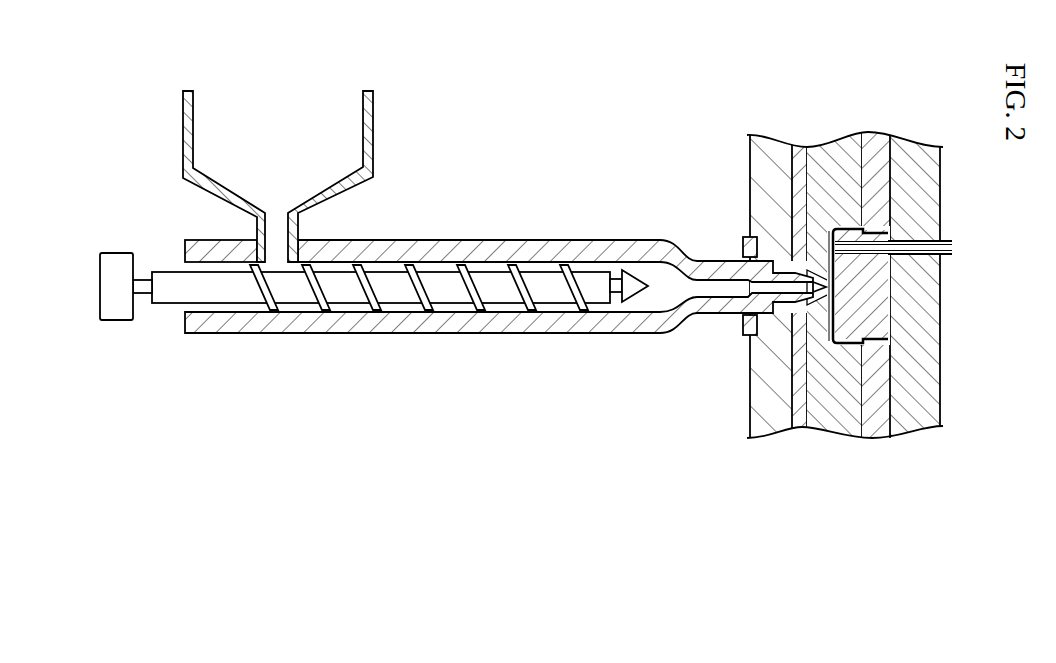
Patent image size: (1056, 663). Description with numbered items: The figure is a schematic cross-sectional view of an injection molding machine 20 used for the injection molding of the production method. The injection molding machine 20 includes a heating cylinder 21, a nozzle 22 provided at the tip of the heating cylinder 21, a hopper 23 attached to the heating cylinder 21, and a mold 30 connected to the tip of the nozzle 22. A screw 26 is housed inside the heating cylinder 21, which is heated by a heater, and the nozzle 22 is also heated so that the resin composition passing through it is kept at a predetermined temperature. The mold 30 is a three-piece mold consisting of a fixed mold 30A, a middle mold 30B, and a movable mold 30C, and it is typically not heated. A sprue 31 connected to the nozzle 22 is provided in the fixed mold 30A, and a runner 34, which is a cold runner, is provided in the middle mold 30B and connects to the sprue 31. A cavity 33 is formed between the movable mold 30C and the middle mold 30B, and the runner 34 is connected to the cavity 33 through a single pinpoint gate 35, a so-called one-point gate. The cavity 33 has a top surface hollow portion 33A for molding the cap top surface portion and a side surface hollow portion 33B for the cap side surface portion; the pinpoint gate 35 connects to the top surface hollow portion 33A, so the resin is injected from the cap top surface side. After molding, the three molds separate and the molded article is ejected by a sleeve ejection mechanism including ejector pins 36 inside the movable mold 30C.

The injection molding machine 20 is at (576, 126).
The heating cylinder 21 is at (505, 298).
The nozzle 22 is at (717, 261).
The hopper 23 is at (376, 105).
The screw 26 is at (349, 294).
The mold 30 is at (892, 104).
The fixed mold 30A is at (809, 445).
The middle mold 30B is at (835, 418).
The movable mold 30C is at (938, 445).
The sprue 31 is at (782, 260).
The cavity 33 is at (840, 243).
The top surface hollow portion 33A is at (831, 342).
The side surface hollow portion 33B is at (843, 228).
The runner 34 is at (828, 284).
The pinpoint gate 35 is at (757, 336).
The ejector pins 36 is at (872, 230).